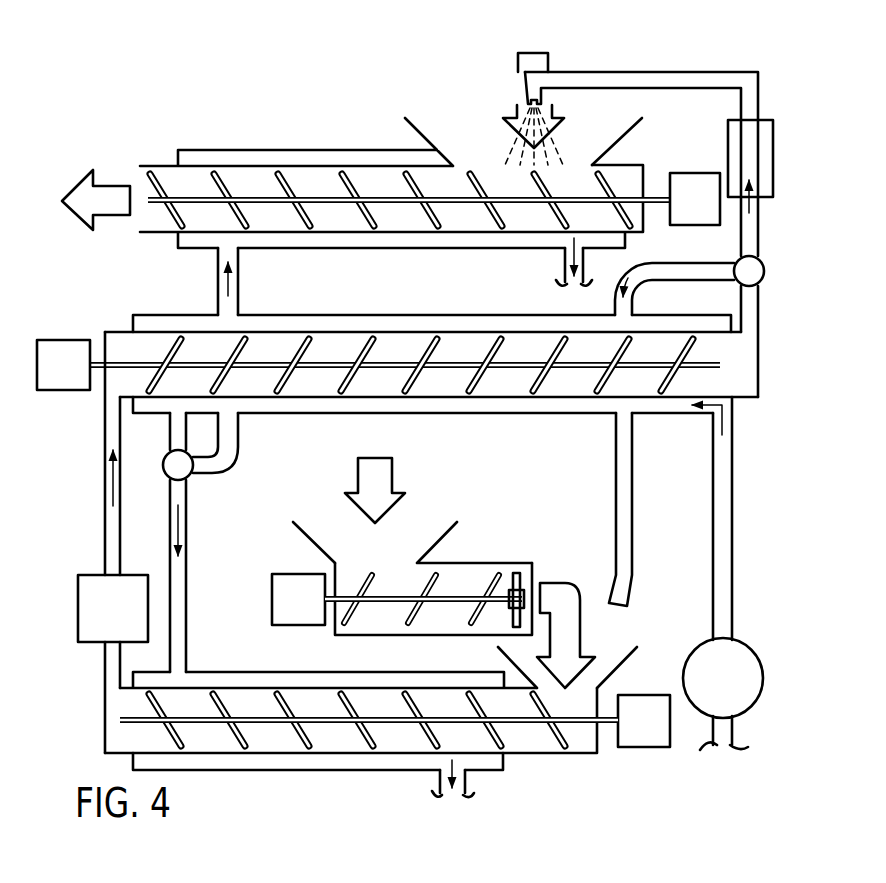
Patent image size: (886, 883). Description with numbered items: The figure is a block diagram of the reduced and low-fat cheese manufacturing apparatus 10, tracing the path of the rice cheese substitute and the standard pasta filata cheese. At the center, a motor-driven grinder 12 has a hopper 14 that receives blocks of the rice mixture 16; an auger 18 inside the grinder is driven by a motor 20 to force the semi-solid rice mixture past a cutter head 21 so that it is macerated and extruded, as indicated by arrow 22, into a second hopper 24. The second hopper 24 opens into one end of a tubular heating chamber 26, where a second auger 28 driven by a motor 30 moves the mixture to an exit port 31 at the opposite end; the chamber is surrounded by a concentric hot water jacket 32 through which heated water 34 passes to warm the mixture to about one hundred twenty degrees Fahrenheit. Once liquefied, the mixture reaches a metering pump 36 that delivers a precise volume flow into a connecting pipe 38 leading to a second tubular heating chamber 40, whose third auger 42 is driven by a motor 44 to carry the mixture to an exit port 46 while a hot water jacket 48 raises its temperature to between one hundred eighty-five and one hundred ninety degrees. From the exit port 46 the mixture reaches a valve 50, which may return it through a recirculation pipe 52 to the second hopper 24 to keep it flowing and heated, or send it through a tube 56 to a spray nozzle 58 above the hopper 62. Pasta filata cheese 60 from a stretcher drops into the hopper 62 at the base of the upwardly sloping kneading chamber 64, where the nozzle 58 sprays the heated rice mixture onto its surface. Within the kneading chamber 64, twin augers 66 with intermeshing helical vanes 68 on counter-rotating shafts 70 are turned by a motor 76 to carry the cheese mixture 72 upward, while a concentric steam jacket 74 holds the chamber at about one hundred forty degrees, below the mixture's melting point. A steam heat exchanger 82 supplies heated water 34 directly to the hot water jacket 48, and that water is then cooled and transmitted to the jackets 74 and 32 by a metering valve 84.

The reduced and low-fat cheese manufacturing apparatus 10 is at (226, 28).
The motor-driven grinder 12 is at (283, 550).
The hopper 14 is at (449, 534).
The rice mixture 16 is at (380, 478).
The auger 18 is at (420, 614).
The motor 20 is at (312, 612).
The cutter head 21 is at (524, 574).
The arrow 22 is at (581, 624).
The second hopper 24 is at (613, 676).
The tubular heating chamber 26 is at (529, 757).
The second auger 28 is at (297, 737).
The motor 30 is at (658, 733).
The exit port 31 is at (108, 667).
The hot water jacket 32 is at (410, 773).
The heated water 34 is at (332, 760).
The metering pump 36 is at (127, 621).
The connecting pipe 38 is at (105, 506).
The second tubular heating chamber 40 is at (112, 309).
The third auger 42 is at (352, 343).
The motor 44 is at (77, 378).
The exit port 46 is at (758, 326).
The hot water jacket 48 is at (420, 315).
The valve 50 is at (764, 266).
The recirculation pipe 52 is at (615, 449).
The tube 56 is at (762, 100).
The spray nozzle 58 is at (530, 97).
The pasta filata cheese 60 is at (546, 62).
The hopper 62 is at (622, 137).
The kneading chamber 64 is at (281, 115).
The twin augers 66 is at (172, 184).
The helical vanes 68 is at (214, 175).
The shafts 70 is at (318, 196).
The cheese mixture 72 is at (76, 186).
The steam jacket 74 is at (296, 250).
The motor 76 is at (708, 212).
The steam heat exchanger 82 is at (752, 643).
The metering valve 84 is at (191, 476).